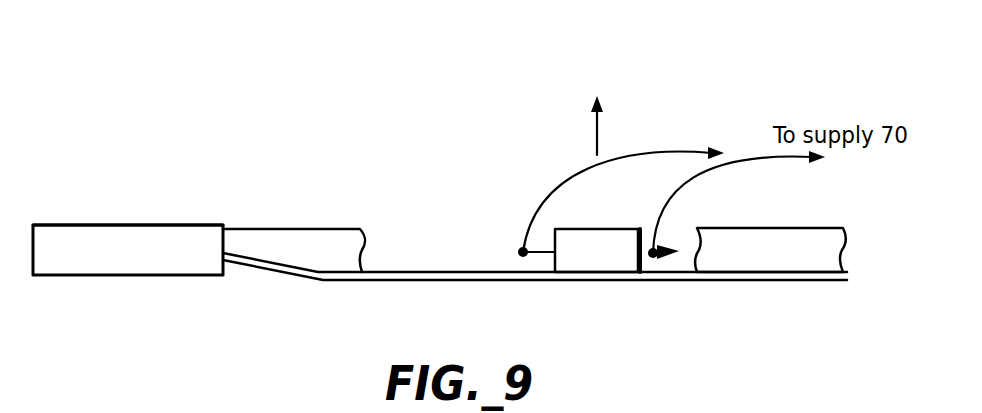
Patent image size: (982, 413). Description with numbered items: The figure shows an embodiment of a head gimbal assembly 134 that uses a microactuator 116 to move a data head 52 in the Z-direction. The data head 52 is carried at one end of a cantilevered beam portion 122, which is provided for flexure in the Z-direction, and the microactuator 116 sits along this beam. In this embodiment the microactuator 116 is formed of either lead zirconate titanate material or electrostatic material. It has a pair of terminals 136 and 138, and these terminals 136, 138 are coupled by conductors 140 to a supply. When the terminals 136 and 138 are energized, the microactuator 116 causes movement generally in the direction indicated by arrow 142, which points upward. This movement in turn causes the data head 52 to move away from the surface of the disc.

The data head 52 is at (107, 288).
The head gimbal assembly 134 is at (107, 212).
The cantilevered beam portion 122 is at (413, 283).
The terminal 136 is at (520, 250).
The microactuator 116 is at (589, 265).
The terminal 138 is at (698, 227).
The conductors 140 is at (673, 153).
The arrow 142 is at (597, 130).